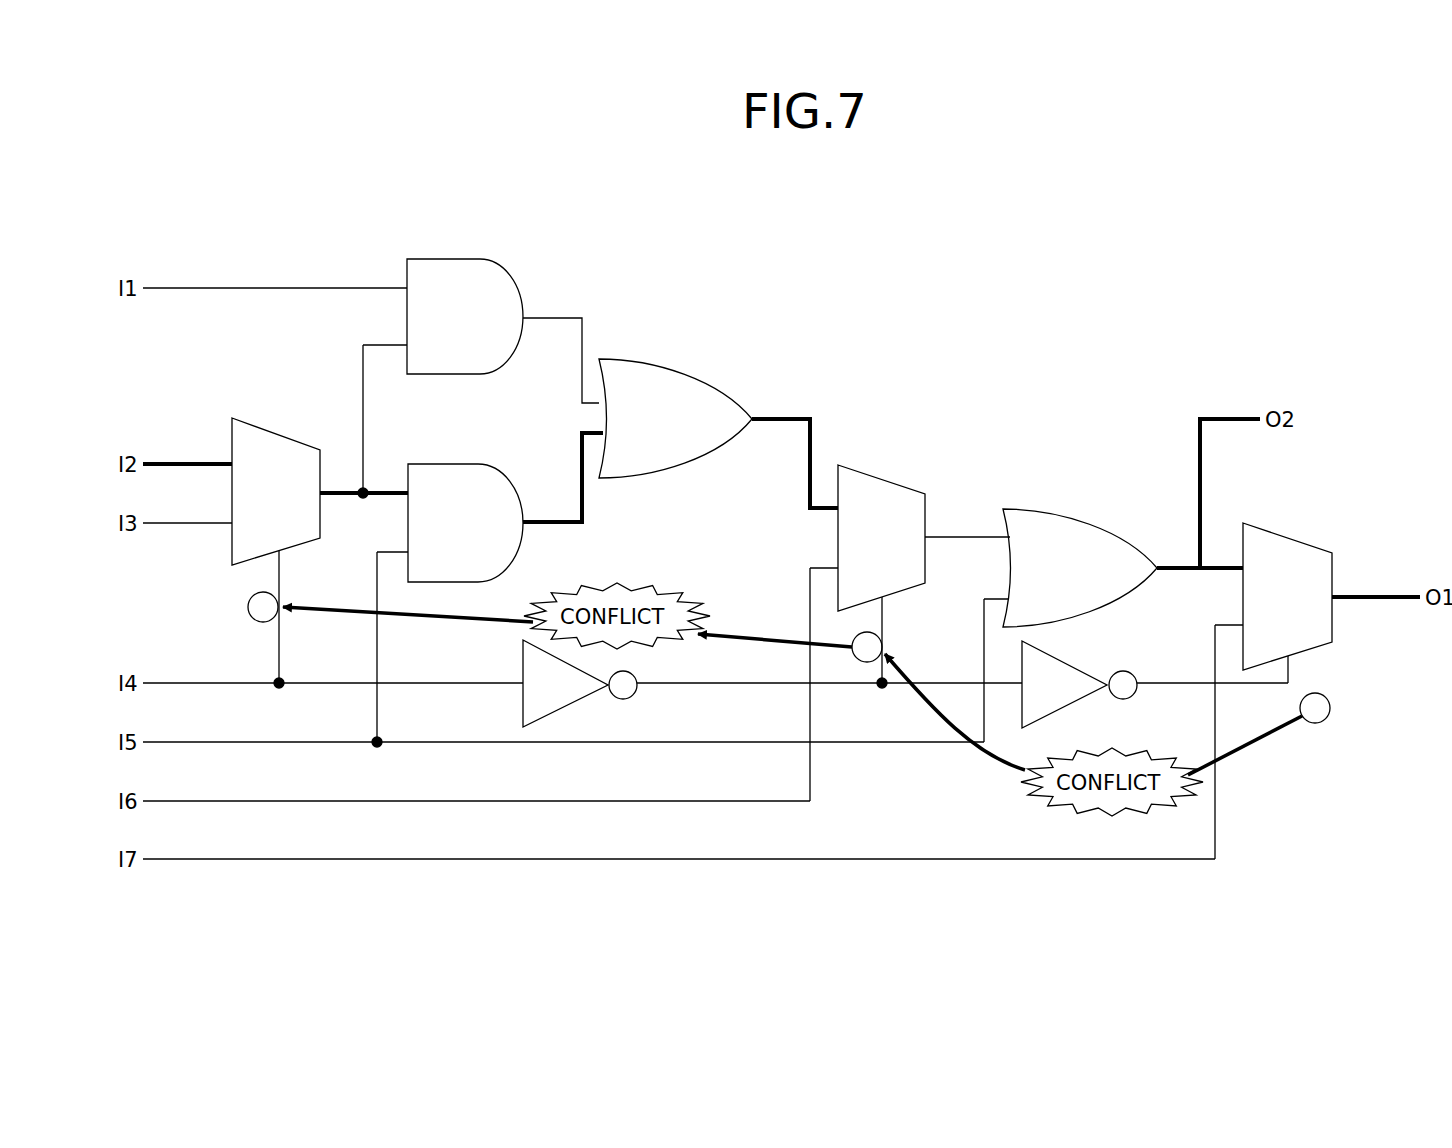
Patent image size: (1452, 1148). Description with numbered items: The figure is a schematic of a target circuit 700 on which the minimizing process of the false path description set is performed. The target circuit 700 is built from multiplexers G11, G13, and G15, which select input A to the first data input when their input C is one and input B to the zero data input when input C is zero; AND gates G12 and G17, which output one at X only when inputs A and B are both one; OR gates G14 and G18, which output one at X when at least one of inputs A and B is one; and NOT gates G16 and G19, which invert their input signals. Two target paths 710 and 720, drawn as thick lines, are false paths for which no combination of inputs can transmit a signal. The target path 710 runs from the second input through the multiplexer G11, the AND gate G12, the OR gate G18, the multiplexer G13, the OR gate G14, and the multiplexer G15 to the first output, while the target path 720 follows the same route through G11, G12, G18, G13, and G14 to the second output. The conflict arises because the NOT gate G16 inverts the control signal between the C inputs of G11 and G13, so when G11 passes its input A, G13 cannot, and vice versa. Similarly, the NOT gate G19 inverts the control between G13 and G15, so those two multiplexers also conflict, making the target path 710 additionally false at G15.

The multiplexer G11 is at (272, 432).
The AND gate G12 is at (420, 464).
The multiplexer G13 is at (860, 468).
The OR gate G14 is at (1022, 508).
The multiplexer G15 is at (1278, 528).
The NOT gate G16 is at (575, 703).
The AND gate G17 is at (420, 259).
The OR gate G18 is at (655, 360).
The NOT gate G19 is at (1070, 663).
The target circuit 700 is at (1123, 282).
The target path 710 is at (1364, 596).
The target path 720 is at (1220, 418).